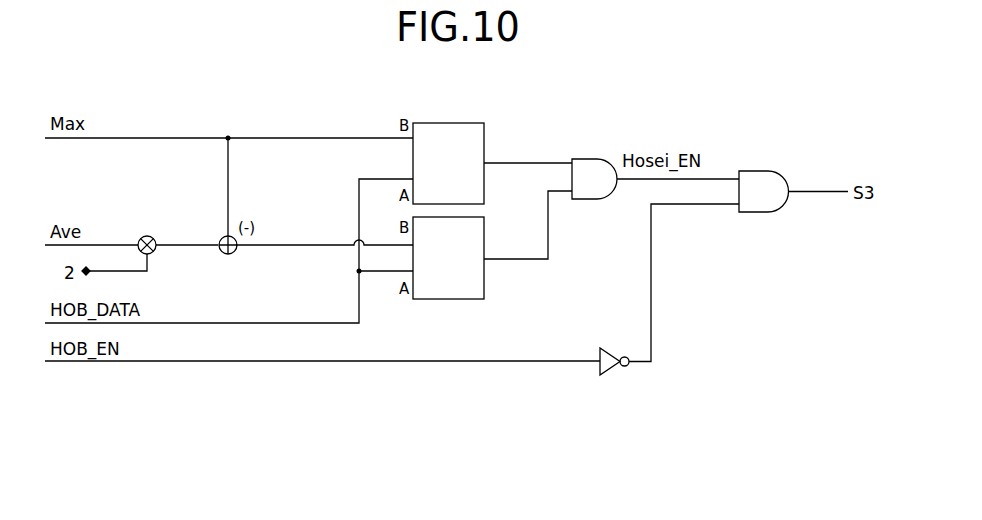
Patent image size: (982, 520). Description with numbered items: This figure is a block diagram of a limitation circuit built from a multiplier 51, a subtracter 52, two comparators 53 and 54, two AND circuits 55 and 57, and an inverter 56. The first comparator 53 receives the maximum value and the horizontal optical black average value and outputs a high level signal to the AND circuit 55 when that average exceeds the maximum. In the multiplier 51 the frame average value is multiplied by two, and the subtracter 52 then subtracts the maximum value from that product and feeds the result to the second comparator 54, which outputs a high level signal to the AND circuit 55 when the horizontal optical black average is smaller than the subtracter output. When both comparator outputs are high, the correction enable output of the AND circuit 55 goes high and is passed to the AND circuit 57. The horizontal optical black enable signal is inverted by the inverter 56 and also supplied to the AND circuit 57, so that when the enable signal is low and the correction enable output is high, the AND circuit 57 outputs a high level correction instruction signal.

The multiplier 51 is at (148, 236).
The subtracter 52 is at (227, 256).
The comparator 53 is at (470, 123).
The comparator 54 is at (458, 300).
The AND circuit 55 is at (587, 158).
The inverter 56 is at (607, 372).
The AND circuit 57 is at (754, 170).